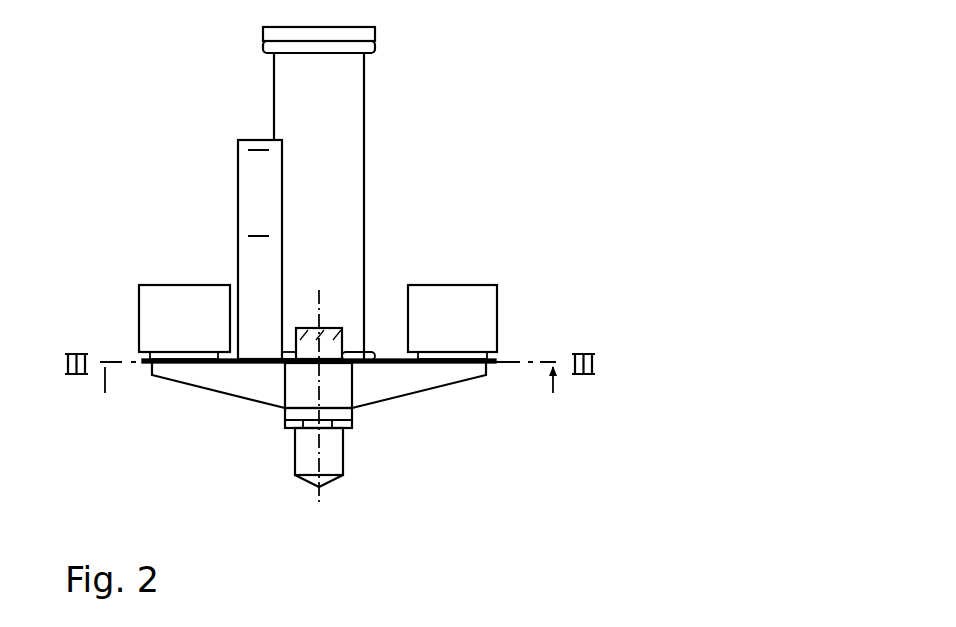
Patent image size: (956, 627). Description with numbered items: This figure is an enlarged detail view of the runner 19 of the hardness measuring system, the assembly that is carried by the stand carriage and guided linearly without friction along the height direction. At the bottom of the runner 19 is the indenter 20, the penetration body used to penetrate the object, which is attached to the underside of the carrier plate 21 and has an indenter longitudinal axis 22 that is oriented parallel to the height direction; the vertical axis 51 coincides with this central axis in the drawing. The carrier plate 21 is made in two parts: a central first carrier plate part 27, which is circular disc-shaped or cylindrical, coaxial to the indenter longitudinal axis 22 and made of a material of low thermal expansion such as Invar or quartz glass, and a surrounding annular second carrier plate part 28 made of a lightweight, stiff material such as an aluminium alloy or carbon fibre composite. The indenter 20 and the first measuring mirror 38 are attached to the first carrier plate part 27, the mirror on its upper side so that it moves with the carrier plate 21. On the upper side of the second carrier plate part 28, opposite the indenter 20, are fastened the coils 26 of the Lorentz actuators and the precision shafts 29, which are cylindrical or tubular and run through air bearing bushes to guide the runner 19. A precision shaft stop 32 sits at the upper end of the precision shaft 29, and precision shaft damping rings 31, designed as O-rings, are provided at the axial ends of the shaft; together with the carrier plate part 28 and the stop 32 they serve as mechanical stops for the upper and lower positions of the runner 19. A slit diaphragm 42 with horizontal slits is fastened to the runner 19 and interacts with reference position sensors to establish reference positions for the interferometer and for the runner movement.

The runner 19 is at (545, 149).
The indenter 20 is at (332, 443).
The carrier plate 21 is at (215, 393).
The indenter longitudinal axis 22 is at (320, 460).
The coil 26 is at (150, 303).
The first carrier plate part 27 is at (292, 400).
The second carrier plate part 28 is at (257, 392).
The precision shaft 29 is at (352, 227).
The precision shaft damping ring 31 is at (377, 45).
The precision shaft stop 32 is at (377, 33).
The first measuring mirror 38 is at (343, 360).
The slit diaphragm 42 is at (248, 191).
The vertical axis 51 is at (461, 412).